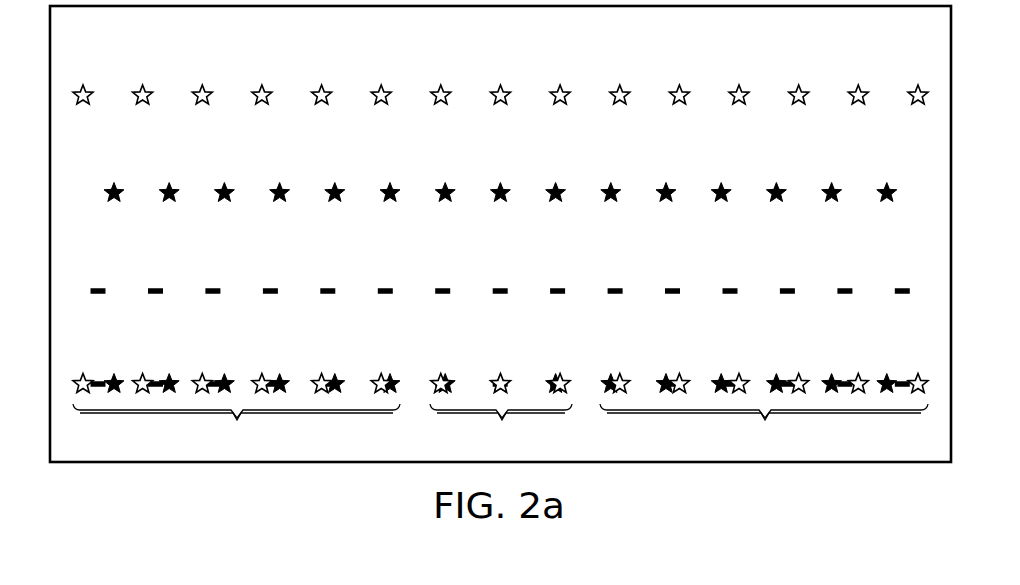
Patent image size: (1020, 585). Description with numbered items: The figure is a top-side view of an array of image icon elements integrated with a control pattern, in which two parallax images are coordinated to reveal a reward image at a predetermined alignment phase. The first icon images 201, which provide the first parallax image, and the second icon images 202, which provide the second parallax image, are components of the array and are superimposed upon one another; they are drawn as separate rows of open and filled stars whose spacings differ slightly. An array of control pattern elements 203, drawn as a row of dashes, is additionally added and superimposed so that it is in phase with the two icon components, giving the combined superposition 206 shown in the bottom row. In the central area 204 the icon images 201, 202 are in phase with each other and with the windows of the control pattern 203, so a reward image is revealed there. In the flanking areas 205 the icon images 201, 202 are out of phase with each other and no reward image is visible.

The icon images 1 201 is at (824, 76).
The icon images 2 202 is at (824, 170).
The array of control pattern elements 203 is at (824, 271).
The overlap area 204 is at (501, 429).
The out-of-phase area 205 is at (500, 429).
The in-phase superposition of components 206 is at (824, 365).